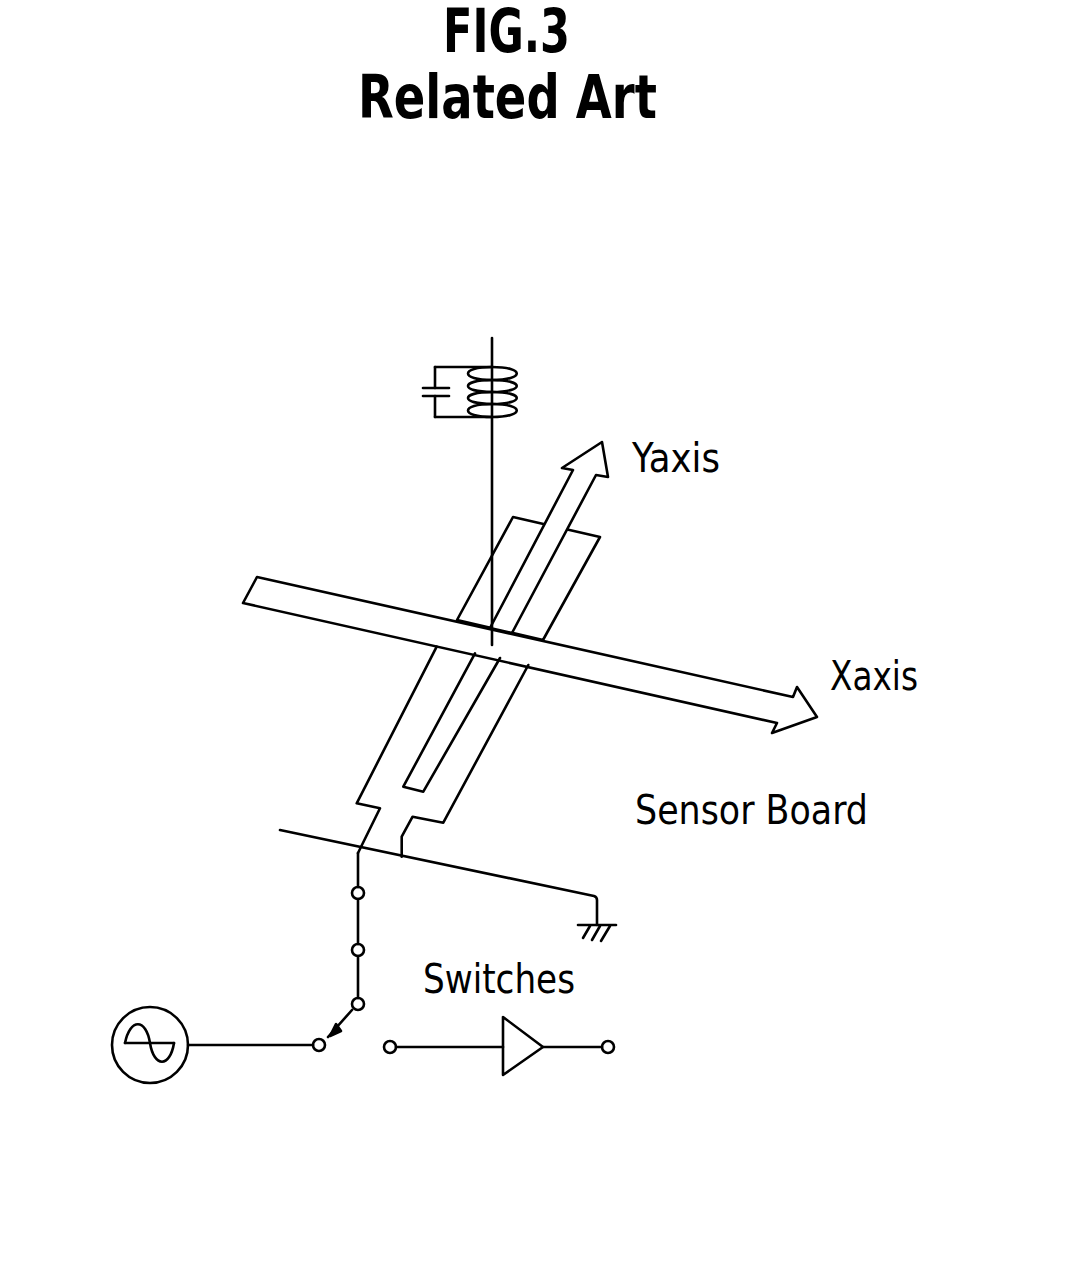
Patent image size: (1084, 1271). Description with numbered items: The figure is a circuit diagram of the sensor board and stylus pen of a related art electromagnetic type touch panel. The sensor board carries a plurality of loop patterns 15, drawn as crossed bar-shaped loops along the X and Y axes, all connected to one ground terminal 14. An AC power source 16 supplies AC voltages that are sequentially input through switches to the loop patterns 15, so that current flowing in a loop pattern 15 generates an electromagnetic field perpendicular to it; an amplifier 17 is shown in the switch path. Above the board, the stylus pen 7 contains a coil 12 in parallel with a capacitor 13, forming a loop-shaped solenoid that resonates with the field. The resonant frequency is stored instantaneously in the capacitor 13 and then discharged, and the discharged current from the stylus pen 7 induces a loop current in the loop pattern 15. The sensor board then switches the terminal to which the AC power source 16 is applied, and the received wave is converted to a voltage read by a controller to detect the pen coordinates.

The stylus pen 7 is at (546, 337).
The coil 12 is at (520, 380).
The capacitor 13 is at (423, 387).
The ground terminal 14 is at (617, 933).
The loop pattern 15 is at (575, 583).
The AC power source 16 is at (146, 1013).
The amplifier 17 is at (520, 1054).